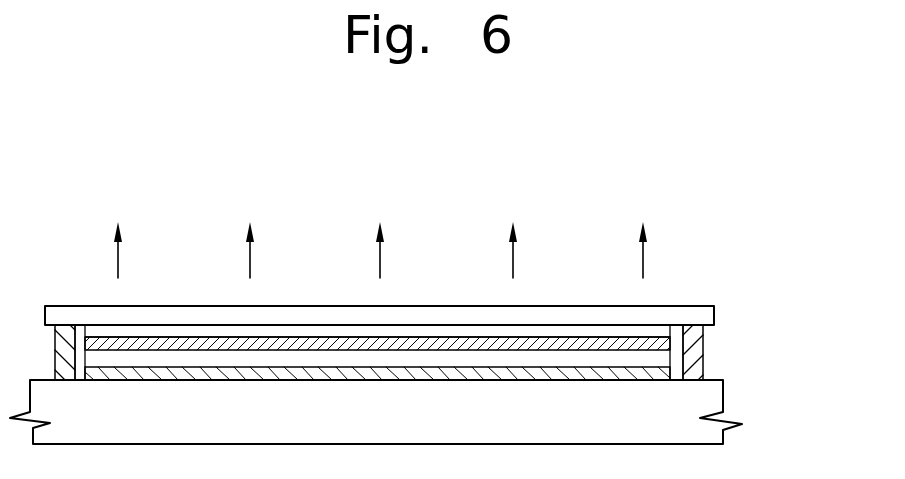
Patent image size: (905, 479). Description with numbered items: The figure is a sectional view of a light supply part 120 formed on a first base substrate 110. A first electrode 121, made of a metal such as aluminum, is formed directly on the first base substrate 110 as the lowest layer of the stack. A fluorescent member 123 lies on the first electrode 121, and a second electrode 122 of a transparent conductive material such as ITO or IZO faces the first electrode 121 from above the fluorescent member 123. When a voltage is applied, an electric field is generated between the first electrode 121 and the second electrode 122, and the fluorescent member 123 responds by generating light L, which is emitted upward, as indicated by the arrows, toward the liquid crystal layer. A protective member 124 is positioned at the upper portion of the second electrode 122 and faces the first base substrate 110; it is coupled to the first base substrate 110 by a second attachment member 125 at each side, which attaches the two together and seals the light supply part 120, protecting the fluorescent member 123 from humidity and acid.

The first base substrate 110 is at (722, 398).
The light supply part 120 is at (462, 320).
The first electrode 121 is at (451, 375).
The second electrode 122 is at (702, 325).
The fluorescent member 123 is at (665, 360).
The protective member 124 is at (687, 306).
The second attachment member 125 is at (695, 342).
The light L is at (643, 258).